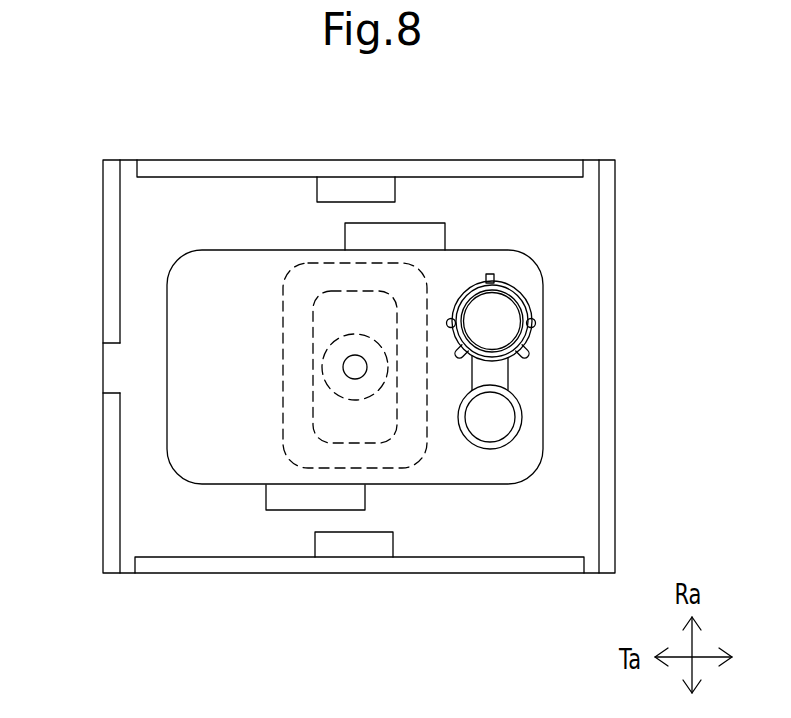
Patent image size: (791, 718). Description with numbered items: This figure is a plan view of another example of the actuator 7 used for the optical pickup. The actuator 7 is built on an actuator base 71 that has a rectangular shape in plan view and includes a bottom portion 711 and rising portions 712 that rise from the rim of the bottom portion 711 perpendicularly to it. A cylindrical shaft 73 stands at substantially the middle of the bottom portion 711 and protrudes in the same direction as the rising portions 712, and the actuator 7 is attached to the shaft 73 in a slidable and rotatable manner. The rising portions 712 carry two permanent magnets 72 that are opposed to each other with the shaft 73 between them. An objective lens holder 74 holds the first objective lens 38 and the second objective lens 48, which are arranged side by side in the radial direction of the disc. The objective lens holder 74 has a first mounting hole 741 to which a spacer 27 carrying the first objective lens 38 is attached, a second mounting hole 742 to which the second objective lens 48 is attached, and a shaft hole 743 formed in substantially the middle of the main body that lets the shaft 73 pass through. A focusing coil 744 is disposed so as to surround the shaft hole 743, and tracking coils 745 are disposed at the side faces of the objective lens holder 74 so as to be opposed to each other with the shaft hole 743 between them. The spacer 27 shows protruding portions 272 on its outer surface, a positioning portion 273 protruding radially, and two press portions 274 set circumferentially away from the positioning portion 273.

The actuator 7 is at (123, 138).
The actuator base 71 is at (150, 233).
The bottom portion 711 is at (148, 283).
The rising portions 712 is at (198, 162).
The permanent magnet 72 is at (357, 187).
The shaft 73 is at (343, 365).
The objective lens holder 74 is at (202, 434).
The first mounting hole 741 is at (502, 284).
The second mounting hole 742 is at (505, 433).
The shaft hole 743 is at (362, 378).
The focusing coil 744 is at (397, 462).
The tracking coil 745 is at (407, 235).
The spacer 27 is at (527, 303).
The protruding portions 272 is at (455, 315).
The positioning portion 273 is at (492, 276).
The press portions 274 is at (497, 357).
The first objective lens 38 is at (495, 326).
The second objective lens 48 is at (498, 407).